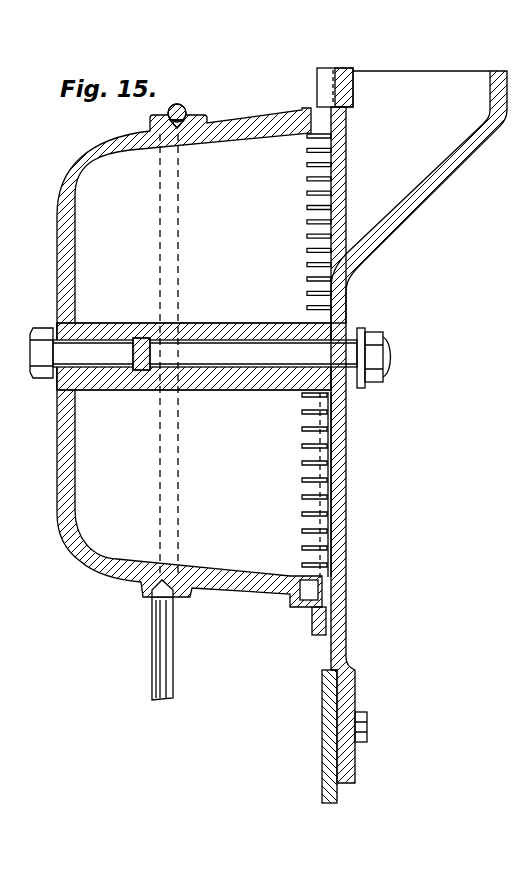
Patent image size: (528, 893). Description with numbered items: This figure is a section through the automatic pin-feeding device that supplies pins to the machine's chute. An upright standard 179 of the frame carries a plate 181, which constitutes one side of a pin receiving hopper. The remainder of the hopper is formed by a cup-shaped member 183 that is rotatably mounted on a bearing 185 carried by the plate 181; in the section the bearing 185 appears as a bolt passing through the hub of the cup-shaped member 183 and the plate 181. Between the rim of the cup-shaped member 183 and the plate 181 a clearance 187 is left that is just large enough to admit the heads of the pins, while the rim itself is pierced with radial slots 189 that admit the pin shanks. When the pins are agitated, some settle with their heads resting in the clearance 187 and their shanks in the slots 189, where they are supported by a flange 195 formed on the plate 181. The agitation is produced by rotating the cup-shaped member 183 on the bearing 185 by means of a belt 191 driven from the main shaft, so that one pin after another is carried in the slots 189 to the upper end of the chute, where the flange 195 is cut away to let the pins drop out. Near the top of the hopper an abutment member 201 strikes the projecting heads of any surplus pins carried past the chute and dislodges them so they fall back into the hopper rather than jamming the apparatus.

The standard 179 is at (325, 696).
The plate 181 is at (345, 487).
The cup-shaped member 183 is at (82, 560).
The bearing 185 is at (121, 323).
The clearance 187 is at (330, 558).
The radial slots 189 is at (308, 262).
The belt 191 is at (184, 109).
The flange 195 is at (319, 637).
The abutment member 201 is at (317, 78).